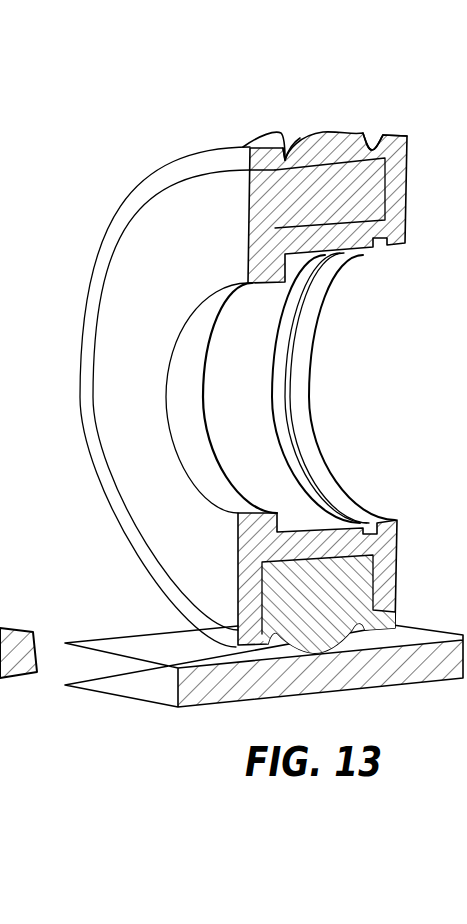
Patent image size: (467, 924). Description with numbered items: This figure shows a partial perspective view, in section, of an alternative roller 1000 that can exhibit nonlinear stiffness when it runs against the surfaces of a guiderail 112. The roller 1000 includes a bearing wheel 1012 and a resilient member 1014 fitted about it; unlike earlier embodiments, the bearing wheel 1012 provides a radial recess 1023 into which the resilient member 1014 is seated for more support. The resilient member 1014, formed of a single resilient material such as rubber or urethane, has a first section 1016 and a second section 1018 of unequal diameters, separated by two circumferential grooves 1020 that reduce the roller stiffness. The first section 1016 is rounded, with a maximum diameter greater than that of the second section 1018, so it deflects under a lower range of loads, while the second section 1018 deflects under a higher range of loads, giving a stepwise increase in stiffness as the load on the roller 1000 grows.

The roller 1000 is at (232, 351).
The bearing wheel 1012 is at (158, 264).
The resilient member 1014 is at (83, 392).
The first section 1016 is at (327, 131).
The second section 1018 is at (203, 150).
The grooves 1020 is at (281, 133).
The radial recess 1023 is at (333, 228).
The guiderail 112 is at (153, 650).